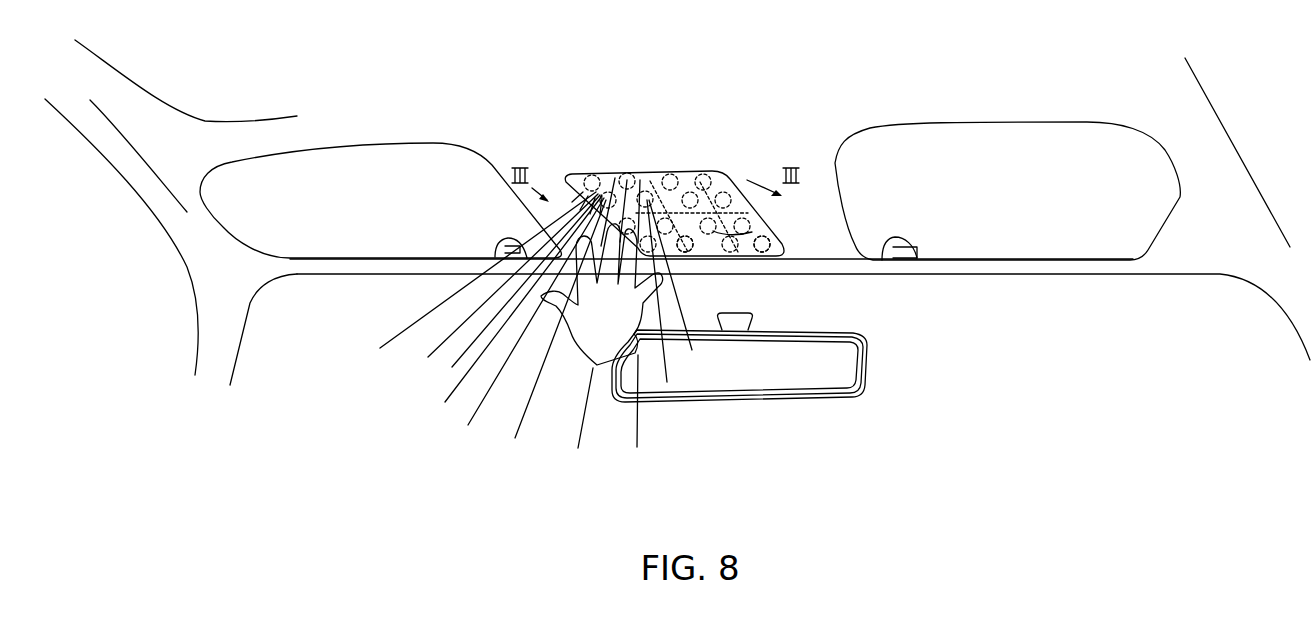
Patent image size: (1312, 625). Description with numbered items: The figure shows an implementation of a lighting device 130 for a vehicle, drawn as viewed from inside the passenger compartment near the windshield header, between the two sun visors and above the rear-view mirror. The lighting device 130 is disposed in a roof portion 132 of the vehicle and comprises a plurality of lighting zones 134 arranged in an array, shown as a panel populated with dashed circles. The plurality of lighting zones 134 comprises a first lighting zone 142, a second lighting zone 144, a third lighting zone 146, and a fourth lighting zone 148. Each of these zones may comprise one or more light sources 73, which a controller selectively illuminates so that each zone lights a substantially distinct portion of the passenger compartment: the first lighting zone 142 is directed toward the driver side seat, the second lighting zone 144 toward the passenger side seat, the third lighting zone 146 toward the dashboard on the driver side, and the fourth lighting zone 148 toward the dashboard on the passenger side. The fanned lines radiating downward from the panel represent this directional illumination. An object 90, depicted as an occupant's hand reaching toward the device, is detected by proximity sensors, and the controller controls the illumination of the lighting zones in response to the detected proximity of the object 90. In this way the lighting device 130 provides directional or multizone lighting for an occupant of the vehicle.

The lighting device 130 is at (683, 78).
The roof portion 132 is at (869, 68).
The first lighting zone 142 is at (607, 178).
The plurality of lighting zones 134 is at (633, 178).
The second lighting zone 144 is at (685, 178).
The light sources 73 is at (772, 241).
The third lighting zone 146 is at (672, 250).
The fourth lighting zone 148 is at (750, 252).
The object 90 is at (590, 333).